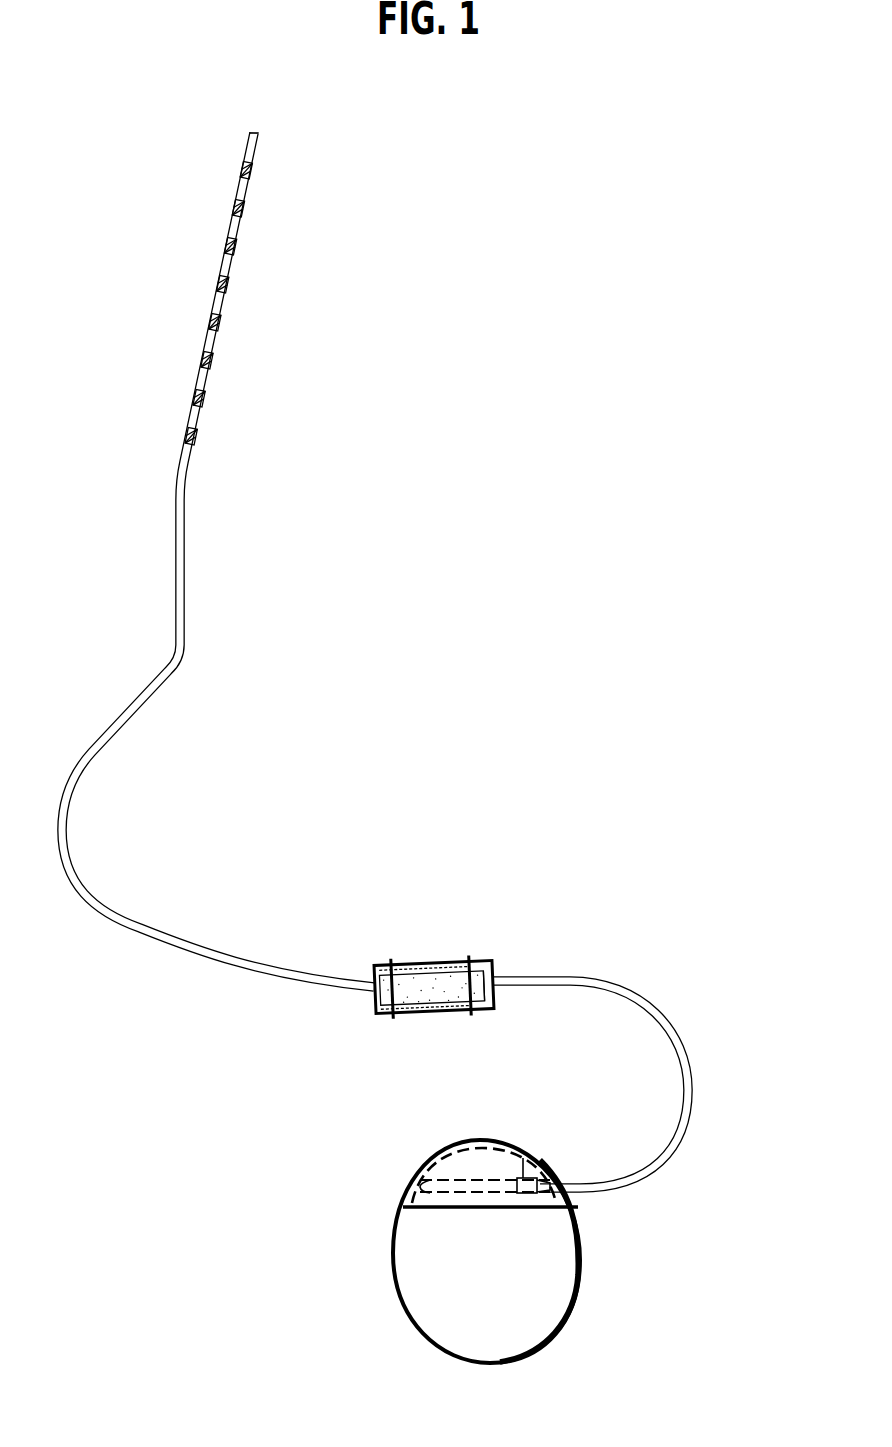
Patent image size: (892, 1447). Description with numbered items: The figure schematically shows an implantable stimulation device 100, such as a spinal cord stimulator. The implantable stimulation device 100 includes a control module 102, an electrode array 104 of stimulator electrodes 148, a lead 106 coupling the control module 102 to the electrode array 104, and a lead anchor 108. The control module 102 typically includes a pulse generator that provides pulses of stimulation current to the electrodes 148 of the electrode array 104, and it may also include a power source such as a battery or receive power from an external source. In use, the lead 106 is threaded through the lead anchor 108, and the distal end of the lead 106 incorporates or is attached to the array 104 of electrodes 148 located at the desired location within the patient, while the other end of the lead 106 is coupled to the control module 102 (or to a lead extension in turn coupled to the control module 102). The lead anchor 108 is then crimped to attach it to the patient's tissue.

The implantable stimulation device 100 is at (492, 522).
The control module 102 is at (391, 1265).
The electrode array 104 is at (234, 300).
The lead 106 is at (180, 563).
The lead anchor 108 is at (420, 960).
The electrodes 148 is at (244, 163).